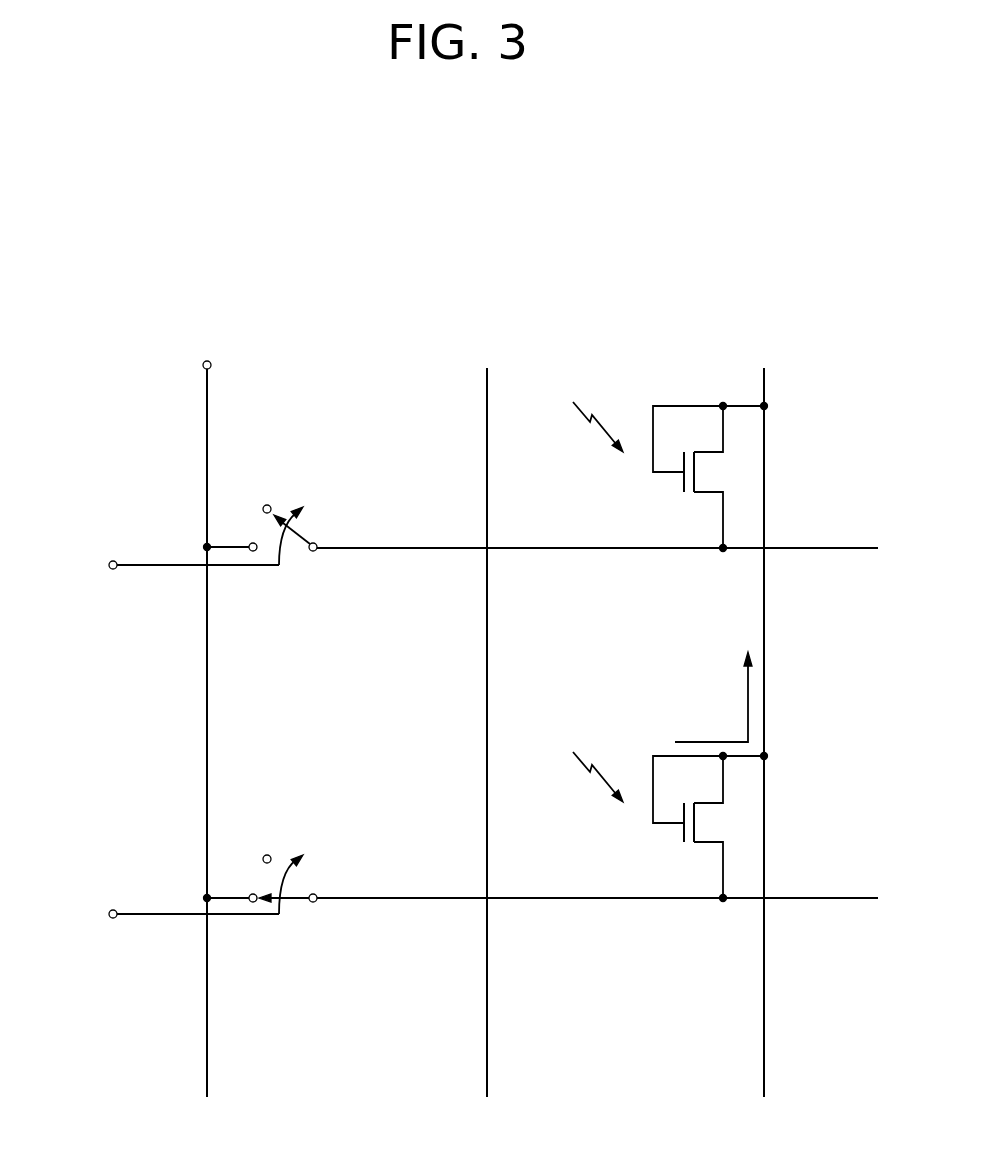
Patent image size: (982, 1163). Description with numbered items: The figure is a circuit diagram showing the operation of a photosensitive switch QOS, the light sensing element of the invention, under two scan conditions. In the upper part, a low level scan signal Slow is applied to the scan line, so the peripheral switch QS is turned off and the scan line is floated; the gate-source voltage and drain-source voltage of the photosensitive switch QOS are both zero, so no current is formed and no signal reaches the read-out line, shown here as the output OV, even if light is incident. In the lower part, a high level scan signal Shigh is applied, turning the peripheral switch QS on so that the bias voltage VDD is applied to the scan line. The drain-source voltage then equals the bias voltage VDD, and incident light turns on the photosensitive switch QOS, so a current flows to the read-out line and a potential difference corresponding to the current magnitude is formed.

The bias voltage VDD is at (850, 898).
The low level scan signal Slow is at (463, 563).
The high level scan signal Shigh is at (458, 913).
The peripheral switch QS is at (262, 724).
The photosensitive switch QOS is at (693, 640).
The output voltage terminal OV is at (850, 548).